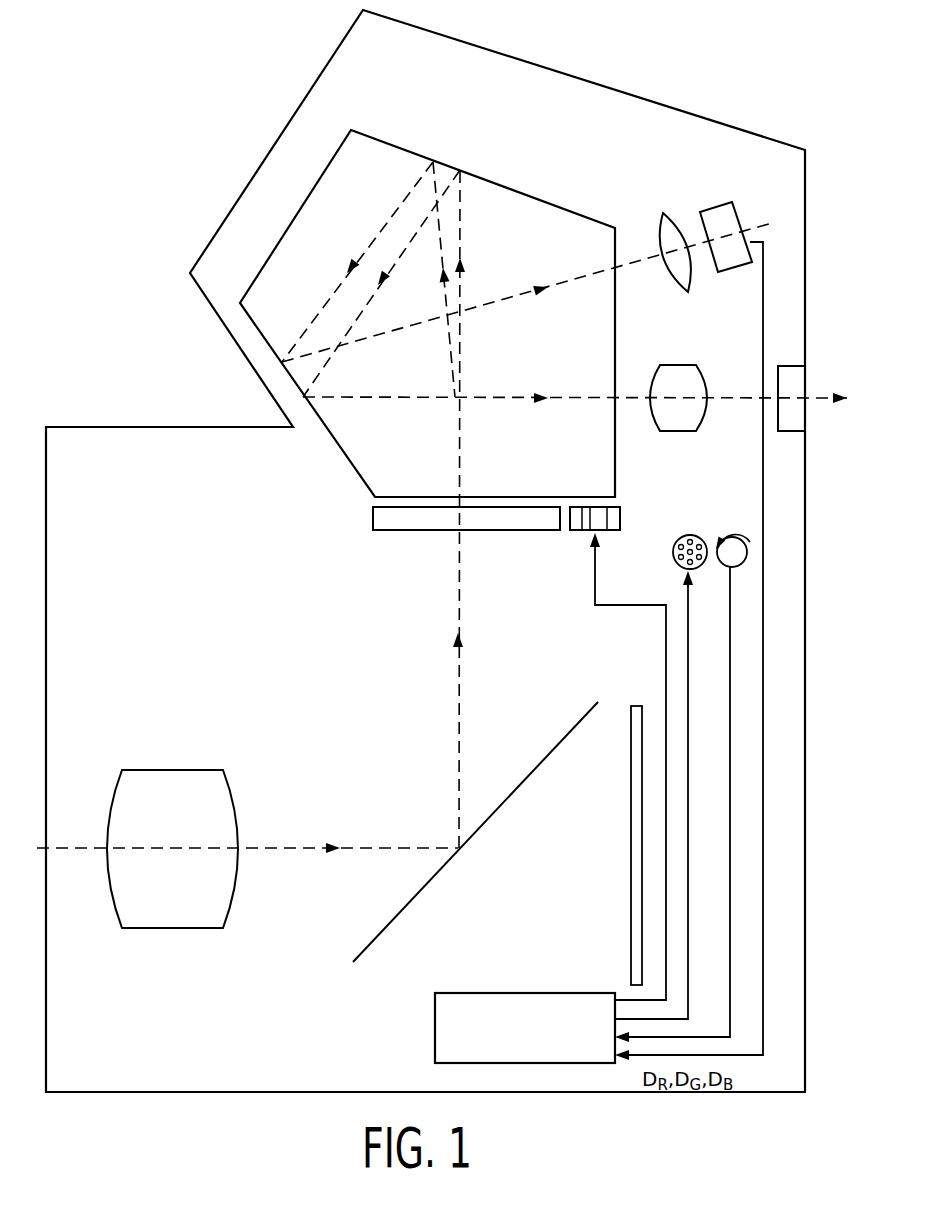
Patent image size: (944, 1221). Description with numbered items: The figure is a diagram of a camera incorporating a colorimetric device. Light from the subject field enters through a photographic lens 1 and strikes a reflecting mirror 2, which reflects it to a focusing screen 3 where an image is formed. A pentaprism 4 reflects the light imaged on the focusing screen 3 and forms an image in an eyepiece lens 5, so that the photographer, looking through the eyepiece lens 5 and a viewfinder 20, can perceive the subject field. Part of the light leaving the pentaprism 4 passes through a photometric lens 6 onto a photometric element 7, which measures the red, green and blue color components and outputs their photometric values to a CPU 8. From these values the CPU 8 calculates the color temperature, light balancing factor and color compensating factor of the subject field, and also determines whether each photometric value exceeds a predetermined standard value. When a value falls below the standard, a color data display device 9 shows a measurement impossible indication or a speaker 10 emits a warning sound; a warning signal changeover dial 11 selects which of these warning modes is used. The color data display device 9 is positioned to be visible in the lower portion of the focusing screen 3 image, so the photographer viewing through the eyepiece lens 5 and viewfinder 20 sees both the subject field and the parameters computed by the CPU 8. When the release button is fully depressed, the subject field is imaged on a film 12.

The photographic lens 1 is at (158, 770).
The reflecting mirror 2 is at (530, 772).
The focusing screen 3 is at (405, 525).
The pentaprism 4 is at (366, 162).
The eyepiece lens 5 is at (690, 382).
The photometric lens 6 is at (665, 225).
The photometric element 7 is at (713, 212).
The CPU 8 is at (435, 1024).
The color data display device 9 is at (578, 532).
The speaker 10 is at (727, 537).
The warning signal changeover dial 11 is at (686, 540).
The film 12 is at (636, 705).
The viewfinder 20 is at (795, 383).